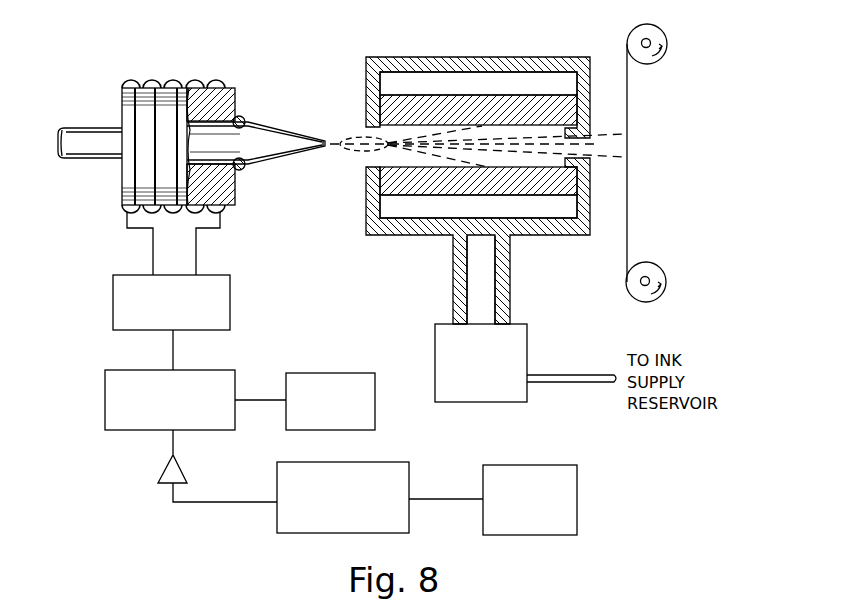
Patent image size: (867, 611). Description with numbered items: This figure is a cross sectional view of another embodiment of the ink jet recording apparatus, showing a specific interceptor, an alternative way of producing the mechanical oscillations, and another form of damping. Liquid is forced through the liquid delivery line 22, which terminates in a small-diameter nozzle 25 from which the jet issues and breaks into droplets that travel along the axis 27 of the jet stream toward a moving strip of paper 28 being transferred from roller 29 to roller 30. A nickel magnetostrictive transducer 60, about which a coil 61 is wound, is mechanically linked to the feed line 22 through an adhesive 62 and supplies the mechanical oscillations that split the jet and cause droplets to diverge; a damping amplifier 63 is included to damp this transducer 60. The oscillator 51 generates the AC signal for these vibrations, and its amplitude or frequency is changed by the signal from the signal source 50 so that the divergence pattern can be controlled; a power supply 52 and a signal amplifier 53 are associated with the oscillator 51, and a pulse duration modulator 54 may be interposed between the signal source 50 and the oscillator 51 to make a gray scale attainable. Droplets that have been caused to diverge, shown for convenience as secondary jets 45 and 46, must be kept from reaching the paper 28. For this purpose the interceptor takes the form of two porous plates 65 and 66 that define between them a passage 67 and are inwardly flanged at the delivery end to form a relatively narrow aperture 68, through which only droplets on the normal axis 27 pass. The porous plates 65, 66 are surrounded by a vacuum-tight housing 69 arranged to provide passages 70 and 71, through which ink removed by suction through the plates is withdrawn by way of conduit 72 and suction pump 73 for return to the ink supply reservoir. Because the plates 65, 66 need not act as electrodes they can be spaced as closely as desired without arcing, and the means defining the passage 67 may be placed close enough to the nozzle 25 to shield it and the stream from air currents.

The liquid delivery line 22 is at (226, 150).
The nozzle 25 is at (325, 140).
The axis of the jet stream 27 is at (596, 148).
The paper 28 is at (626, 105).
The roller 29 is at (667, 33).
The roller 30 is at (661, 270).
The secondary jet 45 is at (448, 128).
The secondary jet 46 is at (423, 153).
The signal source 50 is at (570, 474).
The oscillator 51 is at (205, 378).
The power supply 52 is at (343, 377).
The signal amplifier 53 is at (180, 474).
The pulse duration modulator 54 is at (393, 473).
The magnetostrictive transducer 60 is at (221, 89).
The coil 61 is at (210, 213).
The adhesive 62 is at (243, 117).
The damping amplifier 63 is at (224, 295).
The porous plate 65 is at (504, 103).
The porous plate 66 is at (578, 185).
The passage 67 is at (378, 172).
The aperture 68 is at (586, 154).
The vacuum-tight housing 69 is at (420, 62).
The passage 70 is at (392, 80).
The passage 71 is at (408, 207).
The conduit 72 is at (484, 268).
The suction pump 73 is at (518, 340).